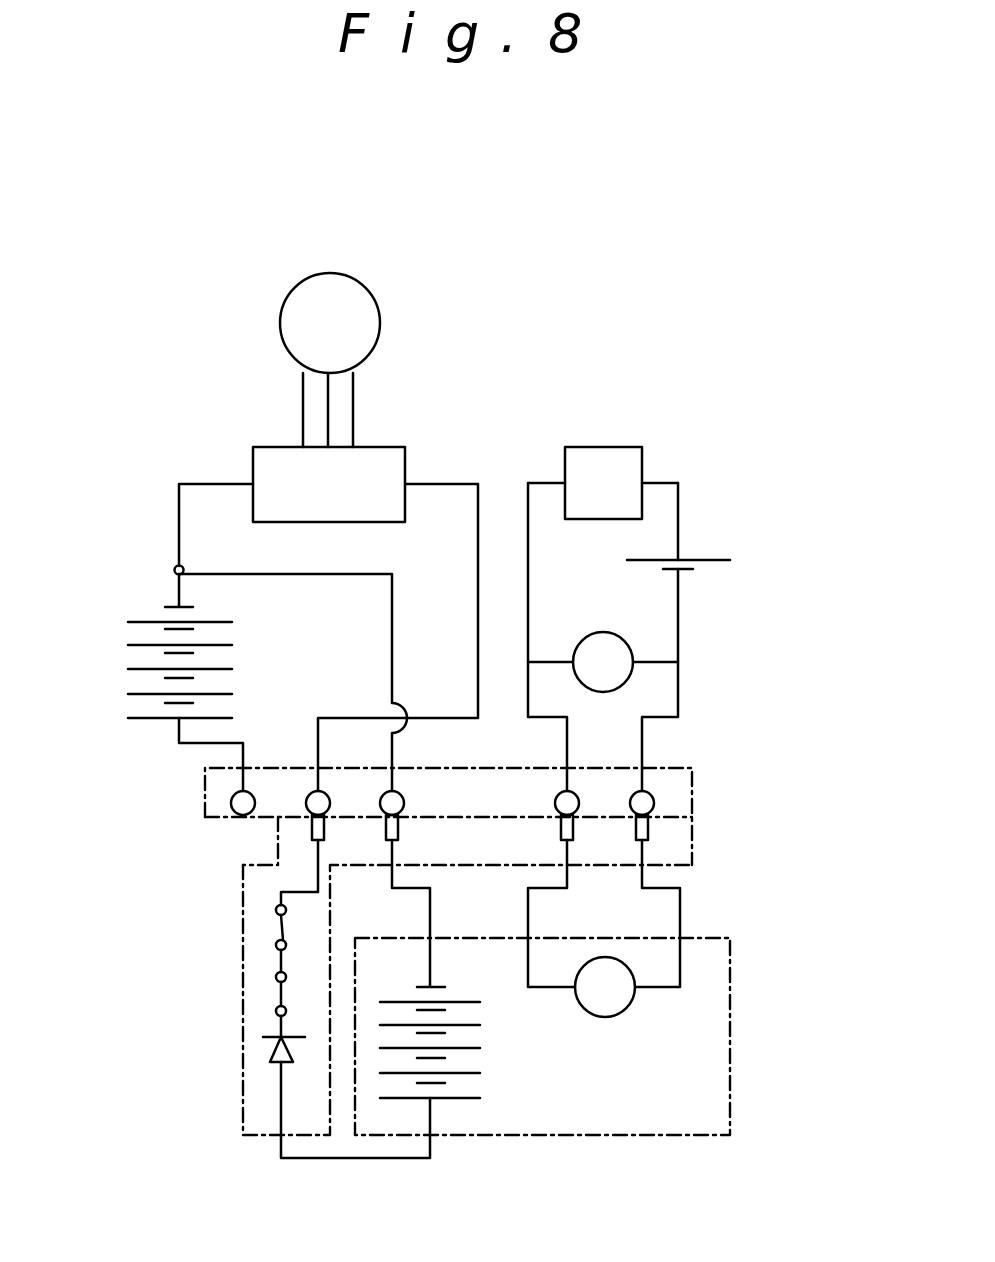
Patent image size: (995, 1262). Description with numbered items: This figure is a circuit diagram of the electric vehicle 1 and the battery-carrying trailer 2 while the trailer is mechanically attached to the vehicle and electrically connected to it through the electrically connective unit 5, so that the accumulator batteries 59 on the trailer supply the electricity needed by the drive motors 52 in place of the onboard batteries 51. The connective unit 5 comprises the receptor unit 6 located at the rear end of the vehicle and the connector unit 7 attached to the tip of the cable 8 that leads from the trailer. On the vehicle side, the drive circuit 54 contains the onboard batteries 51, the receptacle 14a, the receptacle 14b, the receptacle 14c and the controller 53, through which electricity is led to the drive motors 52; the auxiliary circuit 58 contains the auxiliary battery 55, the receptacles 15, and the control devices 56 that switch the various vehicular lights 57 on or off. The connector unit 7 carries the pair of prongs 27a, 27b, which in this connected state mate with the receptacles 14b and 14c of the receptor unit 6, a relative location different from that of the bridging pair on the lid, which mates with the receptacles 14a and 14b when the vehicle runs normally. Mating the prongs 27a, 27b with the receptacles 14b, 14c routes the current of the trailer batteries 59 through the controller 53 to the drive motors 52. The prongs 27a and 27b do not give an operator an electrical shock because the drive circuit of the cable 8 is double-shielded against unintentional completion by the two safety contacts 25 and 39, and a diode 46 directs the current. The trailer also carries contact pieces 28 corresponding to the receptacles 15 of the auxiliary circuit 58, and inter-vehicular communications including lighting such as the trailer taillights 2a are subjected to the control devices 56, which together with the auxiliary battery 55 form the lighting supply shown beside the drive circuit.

The electric vehicle 1 is at (503, 375).
The battery-carrying trailer 2 is at (730, 1005).
The taillights 2a is at (605, 1010).
The electrically connective unit 5 is at (185, 845).
The receptor unit 6 is at (202, 807).
The connector unit 7 is at (240, 875).
The cable 8 is at (433, 907).
The receptacle 14a is at (232, 797).
The receptacle 14b is at (312, 796).
The receptacle 14c is at (398, 800).
The receptacles 15 is at (568, 795).
The safety contact 25 is at (277, 922).
The prong 27a is at (313, 832).
The prong 27b is at (400, 832).
The contact pieces 28 is at (572, 832).
The safety contact 39 is at (277, 995).
The diode 46 is at (275, 1048).
The onboard batteries 51 is at (118, 636).
The drive motors 52 is at (295, 333).
The controller 53 is at (267, 458).
The drive circuit 54 is at (172, 520).
The auxiliary battery 55 is at (712, 565).
The control devices 56 is at (620, 455).
The vehicular lights 57 is at (625, 640).
The auxiliary circuit 58 is at (688, 505).
The batteries 59 is at (482, 1060).